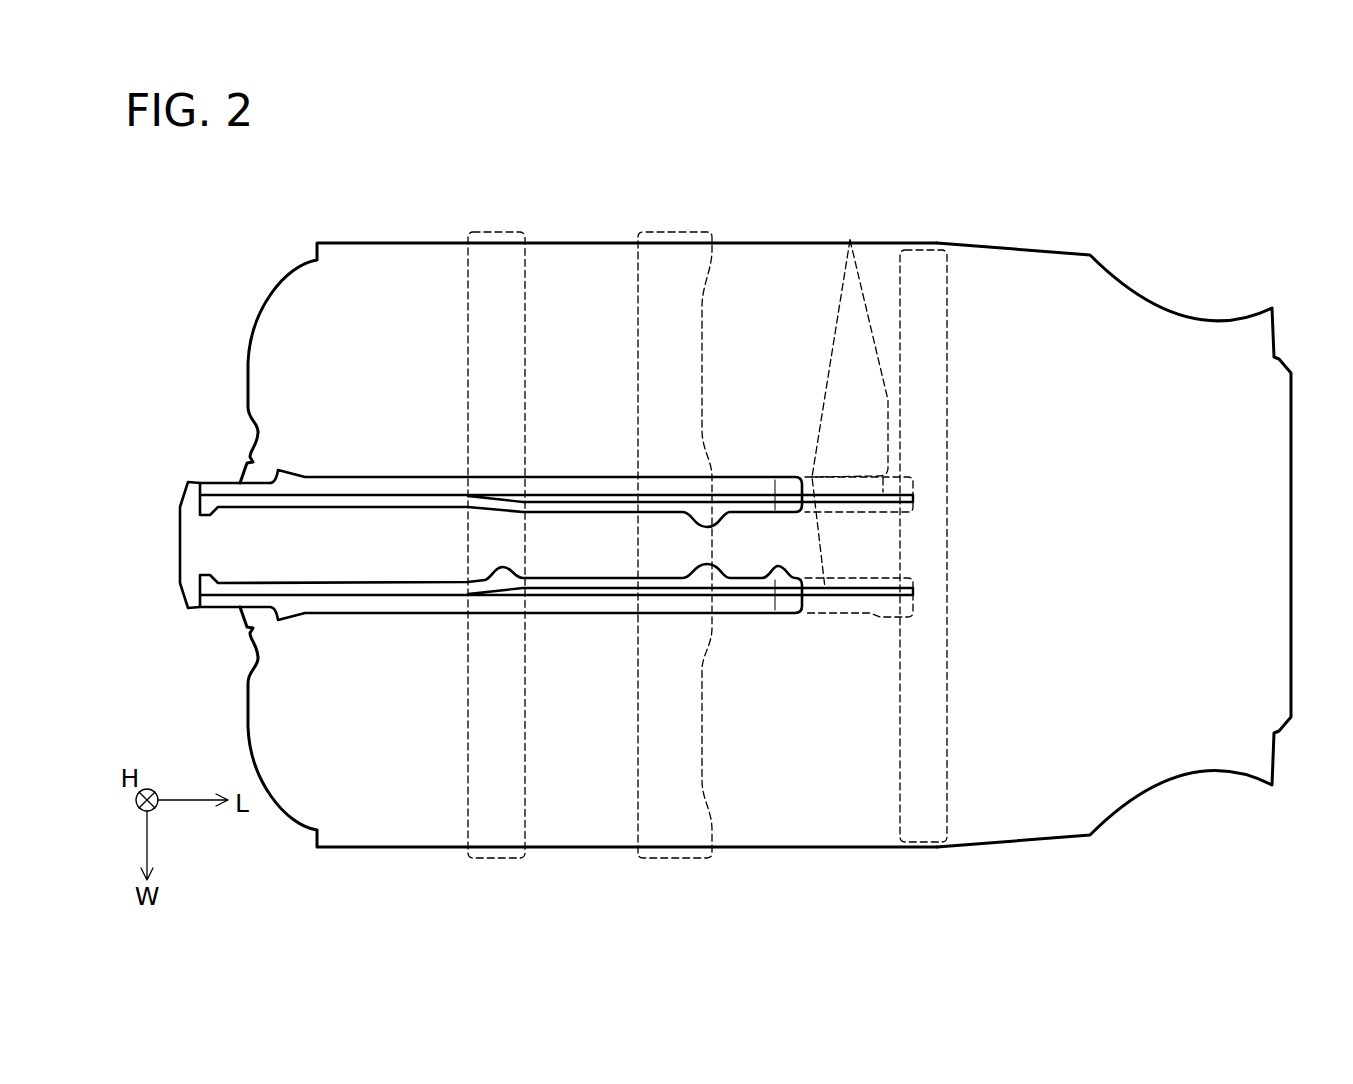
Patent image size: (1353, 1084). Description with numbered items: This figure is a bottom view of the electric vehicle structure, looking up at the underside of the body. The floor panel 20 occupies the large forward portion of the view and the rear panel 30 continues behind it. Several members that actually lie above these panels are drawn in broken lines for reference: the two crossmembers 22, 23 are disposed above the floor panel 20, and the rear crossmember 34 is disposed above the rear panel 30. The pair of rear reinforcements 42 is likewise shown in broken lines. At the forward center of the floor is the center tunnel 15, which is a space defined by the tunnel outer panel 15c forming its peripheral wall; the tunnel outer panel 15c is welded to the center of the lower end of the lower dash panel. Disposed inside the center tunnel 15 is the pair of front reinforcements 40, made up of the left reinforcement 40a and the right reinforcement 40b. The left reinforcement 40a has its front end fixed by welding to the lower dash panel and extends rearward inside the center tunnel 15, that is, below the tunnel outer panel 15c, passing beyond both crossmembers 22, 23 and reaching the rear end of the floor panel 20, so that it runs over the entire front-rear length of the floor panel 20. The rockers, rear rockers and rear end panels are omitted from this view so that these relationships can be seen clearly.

The center tunnel 15 is at (511, 408).
The tunnel outer panel 15c is at (202, 535).
The floor panel 20 is at (270, 367).
The crossmember 22 is at (497, 232).
The crossmember 23 is at (670, 232).
The rear panel 30 is at (1047, 268).
The rear crossmember 34 is at (923, 250).
The front reinforcements 40 is at (556, 374).
The left reinforcement 40a is at (407, 487).
The right reinforcement 40b is at (352, 607).
The rear reinforcements 42 is at (850, 240).